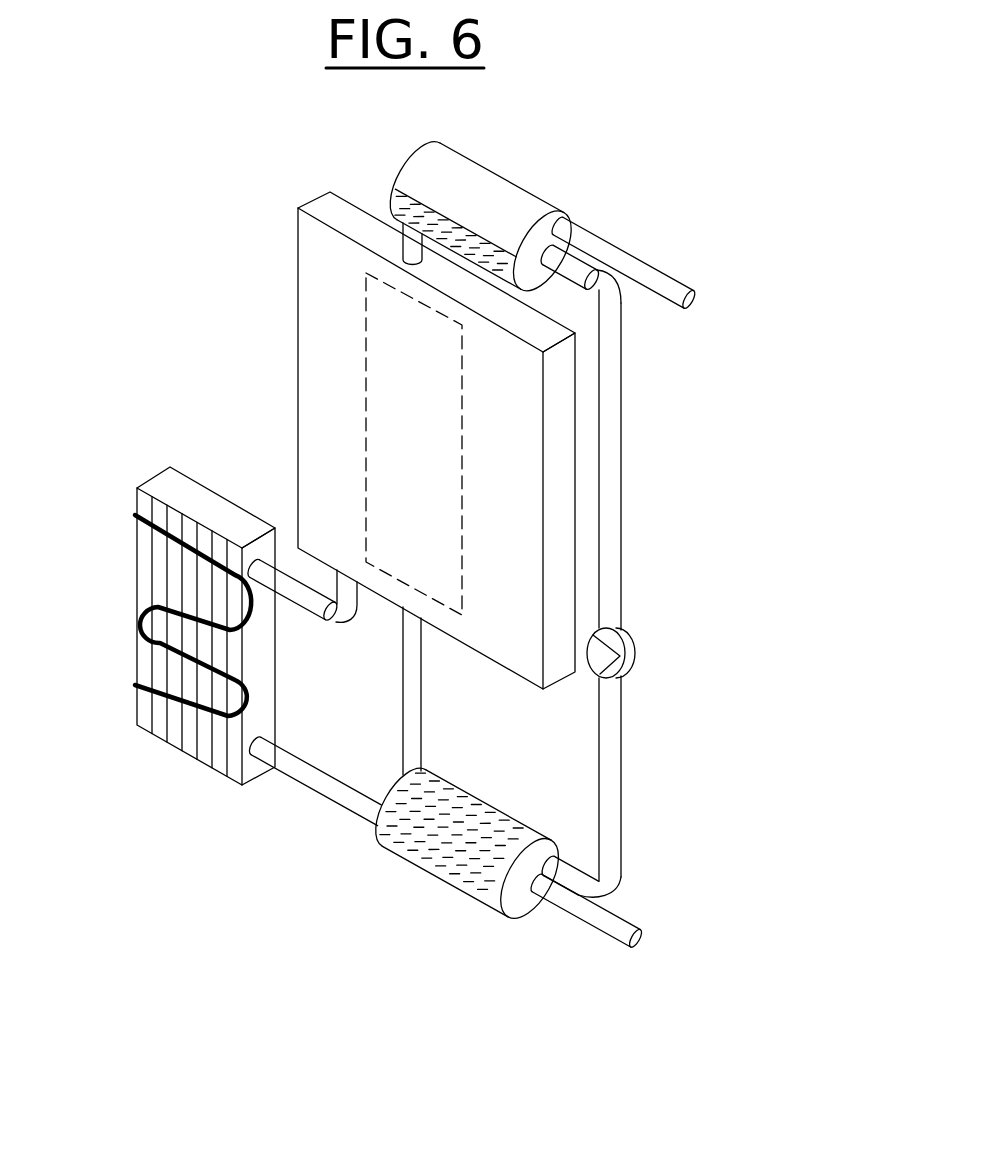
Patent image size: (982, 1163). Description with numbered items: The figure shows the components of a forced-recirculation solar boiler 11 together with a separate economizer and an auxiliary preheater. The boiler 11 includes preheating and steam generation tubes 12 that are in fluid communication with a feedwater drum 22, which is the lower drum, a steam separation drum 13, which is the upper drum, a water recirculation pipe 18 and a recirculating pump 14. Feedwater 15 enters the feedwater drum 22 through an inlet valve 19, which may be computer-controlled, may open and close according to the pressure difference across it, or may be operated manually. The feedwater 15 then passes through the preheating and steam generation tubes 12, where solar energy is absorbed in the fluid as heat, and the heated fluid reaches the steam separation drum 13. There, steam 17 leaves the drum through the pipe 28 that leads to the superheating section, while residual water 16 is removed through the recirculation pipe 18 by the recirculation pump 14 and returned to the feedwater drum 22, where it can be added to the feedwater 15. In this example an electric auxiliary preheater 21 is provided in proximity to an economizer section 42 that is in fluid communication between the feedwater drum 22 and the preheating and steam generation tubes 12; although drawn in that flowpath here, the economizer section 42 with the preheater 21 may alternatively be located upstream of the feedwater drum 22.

The forced-recirculation boiler 11 is at (333, 445).
The preheating and steam generation tubes 12 is at (385, 310).
The steam separation drum 13 is at (420, 145).
The recirculating pump 14 is at (635, 657).
The feedwater 15 is at (477, 882).
The residual water 16 is at (398, 200).
The steam 17 is at (478, 182).
The water recirculation pipe 18 is at (611, 426).
The inlet valve 19 is at (537, 880).
The electric auxiliary preheater 21 is at (155, 525).
The feedwater drum 22 is at (378, 832).
The pipe 28 is at (701, 295).
The economizer section 42 is at (203, 745).